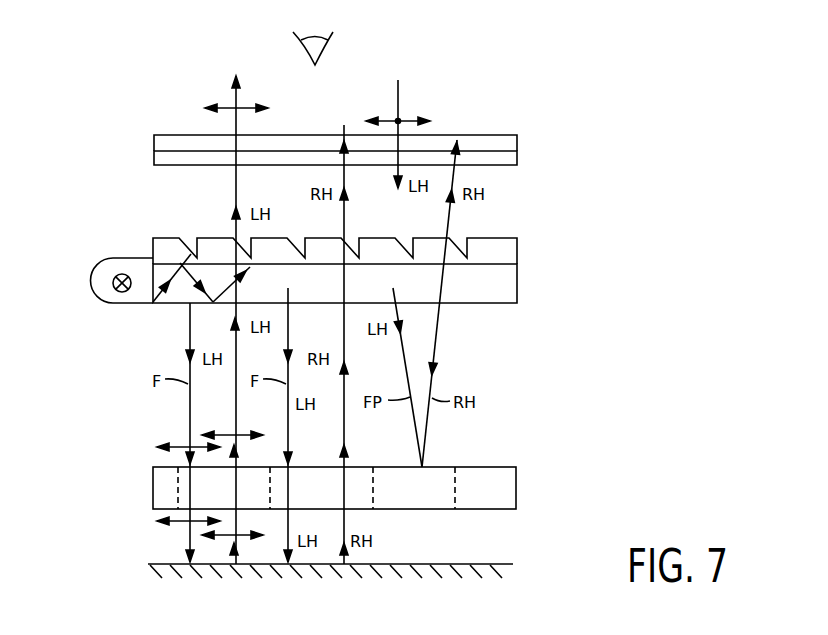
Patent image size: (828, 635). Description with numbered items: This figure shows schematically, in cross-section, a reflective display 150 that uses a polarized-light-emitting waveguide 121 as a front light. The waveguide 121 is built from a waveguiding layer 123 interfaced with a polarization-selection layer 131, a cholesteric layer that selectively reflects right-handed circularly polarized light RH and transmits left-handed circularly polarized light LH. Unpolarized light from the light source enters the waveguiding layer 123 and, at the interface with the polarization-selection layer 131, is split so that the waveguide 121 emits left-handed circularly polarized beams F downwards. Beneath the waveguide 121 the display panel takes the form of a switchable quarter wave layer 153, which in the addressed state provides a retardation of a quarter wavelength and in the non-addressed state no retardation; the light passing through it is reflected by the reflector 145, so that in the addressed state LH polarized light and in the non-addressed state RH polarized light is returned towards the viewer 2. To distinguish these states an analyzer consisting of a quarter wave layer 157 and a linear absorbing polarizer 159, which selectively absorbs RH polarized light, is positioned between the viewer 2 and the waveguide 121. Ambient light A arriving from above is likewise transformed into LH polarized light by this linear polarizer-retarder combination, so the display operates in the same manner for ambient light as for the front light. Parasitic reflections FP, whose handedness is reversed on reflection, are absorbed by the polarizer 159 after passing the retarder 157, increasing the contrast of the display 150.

The viewer 2 is at (333, 32).
The display 150 is at (103, 174).
The linear absorbing polarizer 159 is at (509, 141).
The quarter wave layer 157 is at (509, 160).
The polarization-selection layer 131 is at (509, 253).
The waveguiding layer 123 is at (509, 285).
The waveguide 121 is at (366, 277).
The switchable quarter wave layer 153 is at (508, 483).
The reflector 145 is at (508, 570).
The ambient light A is at (398, 92).